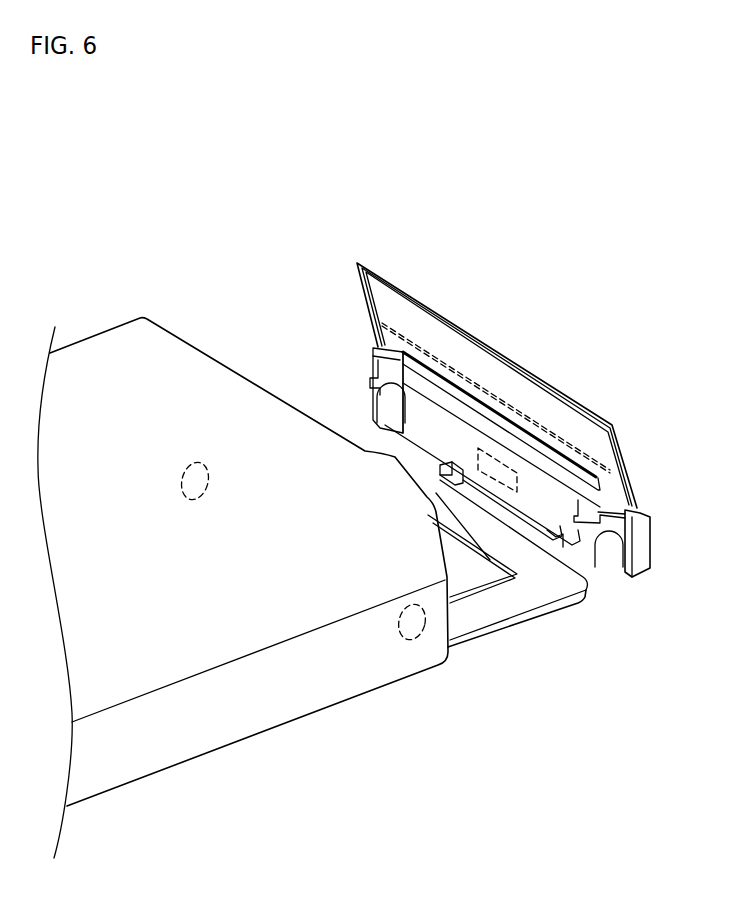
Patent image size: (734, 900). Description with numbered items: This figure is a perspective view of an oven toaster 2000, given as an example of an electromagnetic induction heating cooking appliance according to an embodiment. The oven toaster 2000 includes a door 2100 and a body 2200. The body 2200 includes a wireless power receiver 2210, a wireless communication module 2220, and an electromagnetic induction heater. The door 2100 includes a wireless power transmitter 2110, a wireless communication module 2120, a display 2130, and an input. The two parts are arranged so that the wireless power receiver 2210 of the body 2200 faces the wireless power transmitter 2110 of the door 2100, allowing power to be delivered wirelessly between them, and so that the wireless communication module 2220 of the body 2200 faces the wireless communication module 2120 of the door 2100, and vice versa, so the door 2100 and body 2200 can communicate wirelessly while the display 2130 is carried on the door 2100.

The oven toaster 2000 is at (97, 108).
The body 2200 is at (124, 298).
The wireless communication module 2220 is at (193, 476).
The wireless power receiver 2210 is at (413, 628).
The door 2100 is at (574, 360).
The wireless communication module 2120 is at (392, 407).
The wireless power transmitter 2110 is at (612, 550).
The display 2130 is at (500, 450).